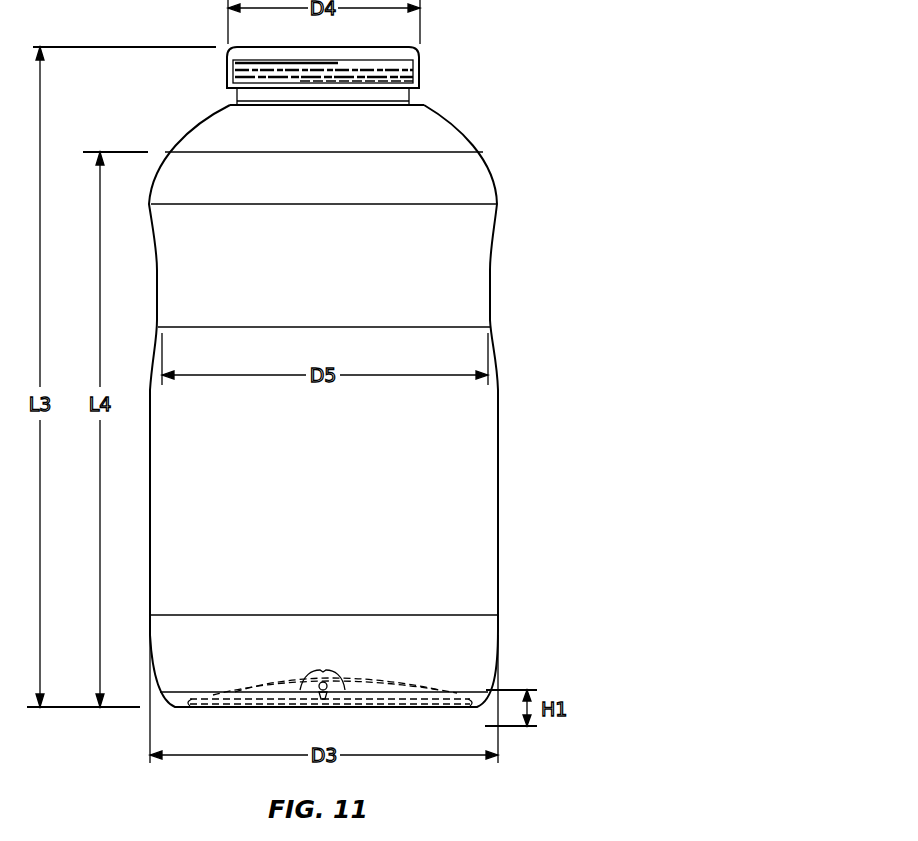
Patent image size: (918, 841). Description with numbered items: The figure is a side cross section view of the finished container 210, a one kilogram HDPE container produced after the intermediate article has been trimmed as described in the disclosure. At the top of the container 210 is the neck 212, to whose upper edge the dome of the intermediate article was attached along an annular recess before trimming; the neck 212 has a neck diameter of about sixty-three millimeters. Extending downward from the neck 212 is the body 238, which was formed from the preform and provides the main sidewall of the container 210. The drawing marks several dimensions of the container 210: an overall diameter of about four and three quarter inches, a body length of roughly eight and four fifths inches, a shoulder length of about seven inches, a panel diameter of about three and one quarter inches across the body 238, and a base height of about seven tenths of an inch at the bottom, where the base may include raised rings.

The container 210 is at (603, 95).
The neck 212 is at (417, 66).
The body 238 is at (483, 445).